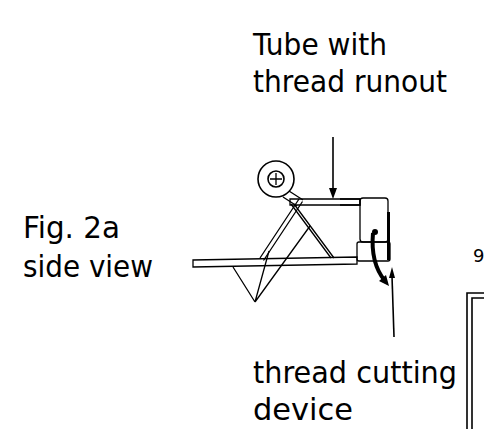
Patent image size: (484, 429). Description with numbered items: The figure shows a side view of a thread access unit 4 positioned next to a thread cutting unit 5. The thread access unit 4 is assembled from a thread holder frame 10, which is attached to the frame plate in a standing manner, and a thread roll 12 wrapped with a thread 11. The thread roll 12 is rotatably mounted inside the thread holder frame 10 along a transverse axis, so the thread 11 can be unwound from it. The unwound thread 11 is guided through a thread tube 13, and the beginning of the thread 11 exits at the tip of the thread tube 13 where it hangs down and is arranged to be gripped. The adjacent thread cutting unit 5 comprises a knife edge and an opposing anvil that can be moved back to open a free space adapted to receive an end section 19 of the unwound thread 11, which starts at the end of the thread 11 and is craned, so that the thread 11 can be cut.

The thread access unit 4 is at (200, 157).
The thread cutting unit 5 is at (405, 192).
The thread holder frame 10 is at (271, 281).
The thread 11 is at (285, 198).
The thread roll 12 is at (263, 165).
The thread tube 13 is at (327, 206).
The end section 19 is at (355, 200).